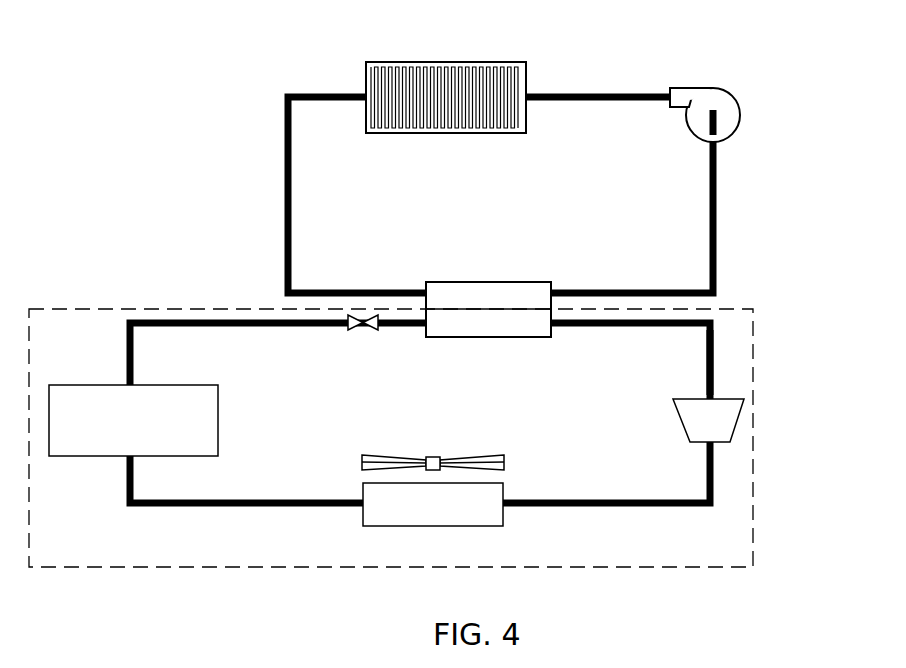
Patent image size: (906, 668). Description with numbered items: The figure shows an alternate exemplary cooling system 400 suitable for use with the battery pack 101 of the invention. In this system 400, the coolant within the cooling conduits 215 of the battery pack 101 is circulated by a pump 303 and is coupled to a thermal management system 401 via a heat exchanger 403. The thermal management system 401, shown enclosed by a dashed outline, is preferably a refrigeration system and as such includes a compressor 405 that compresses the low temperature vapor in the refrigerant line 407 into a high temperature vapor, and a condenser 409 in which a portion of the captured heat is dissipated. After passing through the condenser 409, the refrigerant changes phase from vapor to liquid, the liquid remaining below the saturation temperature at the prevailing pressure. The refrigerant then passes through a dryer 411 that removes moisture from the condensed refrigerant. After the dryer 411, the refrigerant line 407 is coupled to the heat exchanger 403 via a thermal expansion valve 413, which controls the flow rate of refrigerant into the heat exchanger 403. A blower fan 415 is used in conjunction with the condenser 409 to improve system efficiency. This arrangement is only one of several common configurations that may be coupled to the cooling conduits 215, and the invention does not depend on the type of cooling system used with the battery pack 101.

The cooling system 400 is at (451, 295).
The battery pack 101 is at (415, 78).
The cooling conduits 215 is at (390, 80).
The pump 303 is at (683, 115).
The heat exchanger 403 is at (468, 282).
The thermal management system 401 is at (427, 438).
The thermal expansion valve 413 is at (356, 330).
The dryer 411 is at (189, 385).
The condenser 409 is at (503, 497).
The blower fan 415 is at (430, 457).
The compressor 405 is at (675, 409).
The refrigerant line 407 is at (707, 343).